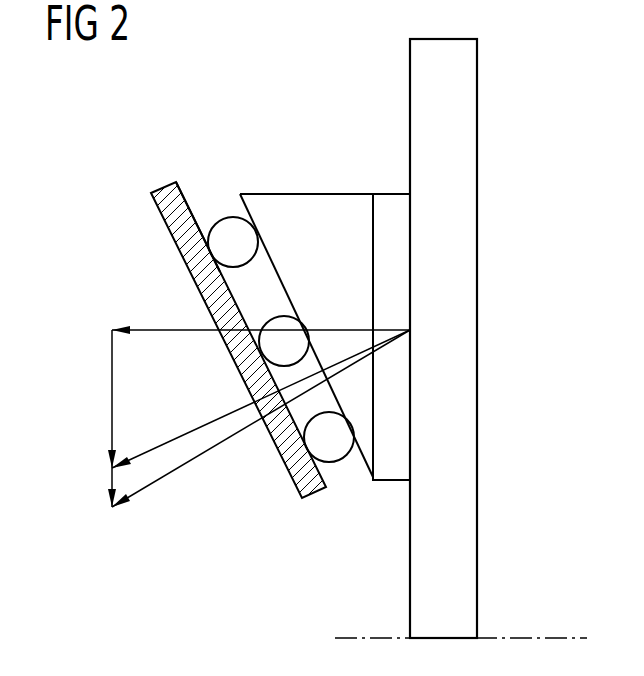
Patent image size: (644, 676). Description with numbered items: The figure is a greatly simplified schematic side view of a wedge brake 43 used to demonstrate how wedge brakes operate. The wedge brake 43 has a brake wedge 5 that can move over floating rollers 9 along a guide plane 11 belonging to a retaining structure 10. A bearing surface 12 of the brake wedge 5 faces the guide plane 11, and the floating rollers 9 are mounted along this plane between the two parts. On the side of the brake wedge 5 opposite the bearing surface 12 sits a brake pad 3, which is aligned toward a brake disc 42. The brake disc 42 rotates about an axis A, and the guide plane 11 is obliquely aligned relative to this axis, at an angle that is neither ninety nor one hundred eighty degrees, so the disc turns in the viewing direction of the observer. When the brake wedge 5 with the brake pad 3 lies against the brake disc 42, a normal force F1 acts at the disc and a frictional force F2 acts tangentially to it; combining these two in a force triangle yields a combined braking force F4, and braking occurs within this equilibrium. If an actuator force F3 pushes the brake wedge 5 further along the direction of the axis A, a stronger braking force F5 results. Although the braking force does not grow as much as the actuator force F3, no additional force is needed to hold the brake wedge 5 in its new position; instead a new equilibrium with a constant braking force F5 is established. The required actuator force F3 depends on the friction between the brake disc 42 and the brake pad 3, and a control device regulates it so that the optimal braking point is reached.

The brake pad 3 is at (393, 207).
The brake wedge 5 is at (306, 301).
The floating rollers 9 is at (340, 463).
The retaining structure 10 is at (223, 325).
The guide plane 11 is at (186, 190).
The bearing surface 12 is at (285, 275).
The brake disc 42 is at (467, 95).
The wedge brake 43 is at (248, 120).
The axis A is at (535, 638).
The normal force F1 is at (182, 332).
The frictional force F2 is at (112, 392).
The actuator force F3 is at (112, 480).
The combined braking force F4 is at (173, 438).
The stronger braking force F5 is at (210, 452).